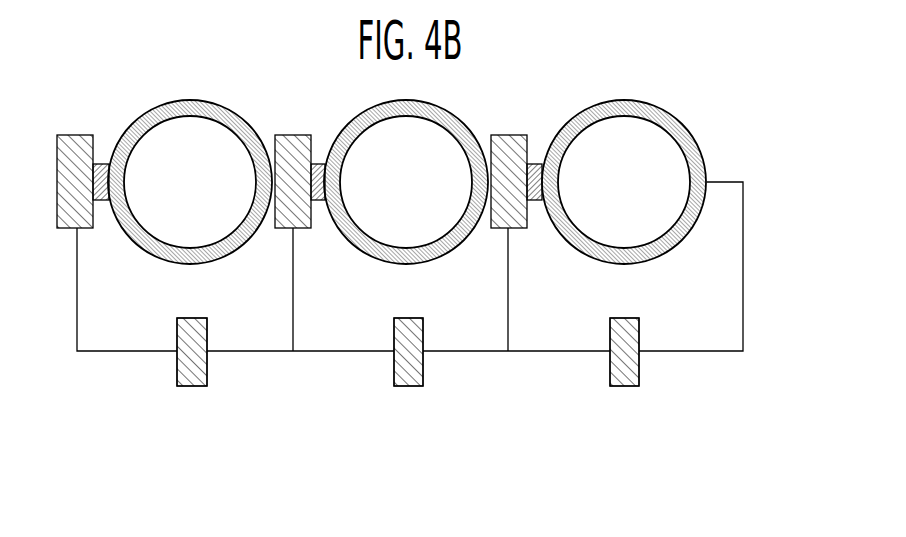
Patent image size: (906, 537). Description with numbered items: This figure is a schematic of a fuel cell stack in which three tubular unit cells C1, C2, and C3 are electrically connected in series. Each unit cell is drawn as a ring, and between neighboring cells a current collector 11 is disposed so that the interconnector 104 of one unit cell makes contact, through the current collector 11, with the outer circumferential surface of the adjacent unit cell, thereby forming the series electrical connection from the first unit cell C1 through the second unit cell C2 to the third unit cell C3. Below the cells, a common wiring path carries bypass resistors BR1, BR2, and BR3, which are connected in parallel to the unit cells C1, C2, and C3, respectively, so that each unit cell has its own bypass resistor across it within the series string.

The current collector 11 is at (73, 135).
The interconnector 104 is at (539, 163).
The unit cell C1 is at (225, 117).
The unit cell C2 is at (442, 117).
The unit cell C3 is at (658, 117).
The bypass resistor BR1 is at (192, 370).
The bypass resistor BR2 is at (409, 370).
The bypass resistor BR3 is at (625, 370).